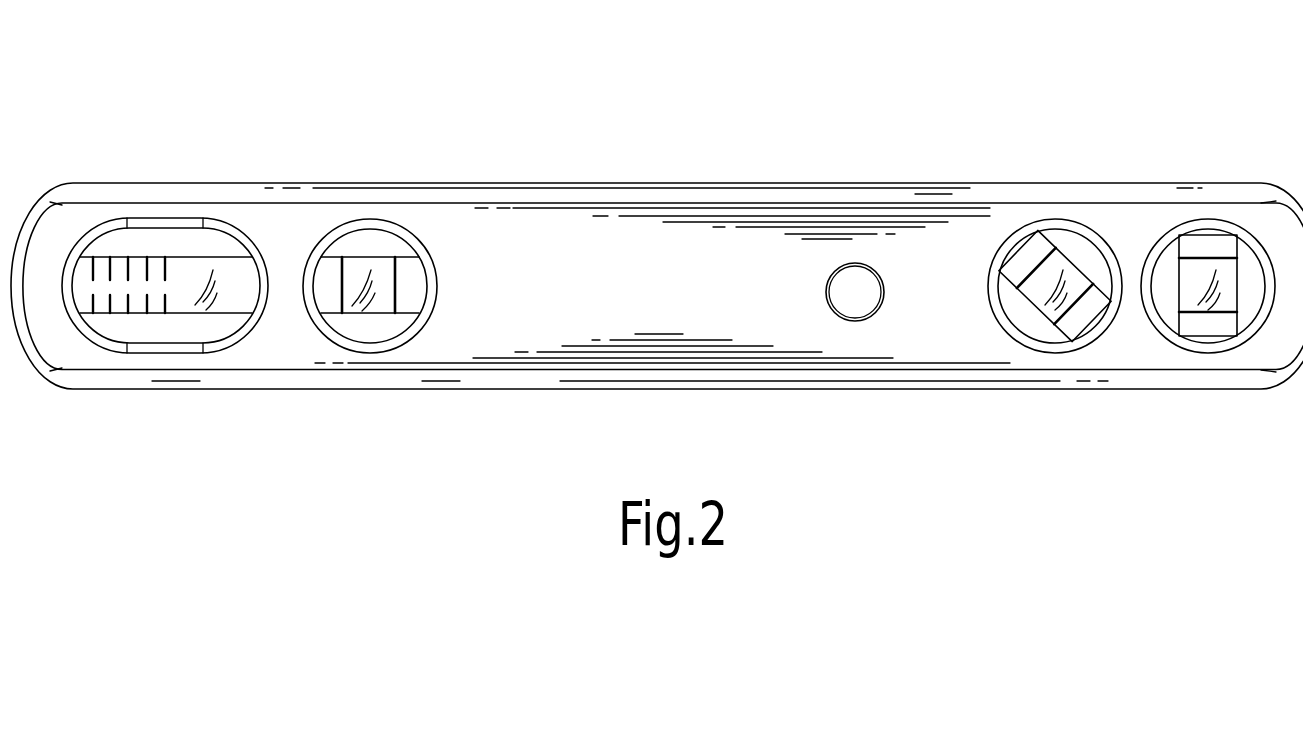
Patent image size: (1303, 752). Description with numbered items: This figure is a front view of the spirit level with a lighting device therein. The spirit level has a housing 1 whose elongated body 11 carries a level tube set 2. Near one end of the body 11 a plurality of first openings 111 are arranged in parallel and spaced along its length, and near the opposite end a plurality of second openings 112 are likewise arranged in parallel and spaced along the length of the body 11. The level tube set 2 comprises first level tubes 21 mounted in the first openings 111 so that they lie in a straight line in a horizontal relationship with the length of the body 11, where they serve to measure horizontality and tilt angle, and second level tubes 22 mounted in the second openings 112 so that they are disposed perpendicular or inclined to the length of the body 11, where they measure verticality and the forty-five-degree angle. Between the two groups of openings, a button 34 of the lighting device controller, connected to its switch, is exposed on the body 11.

The housing 1 is at (598, 148).
The body 11 is at (815, 183).
The level tube set 2 is at (171, 232).
The first level tube 21 is at (198, 280).
The second level tube 22 is at (1067, 270).
The first opening 111 is at (165, 343).
The second opening 112 is at (1035, 338).
The button 34 is at (855, 300).